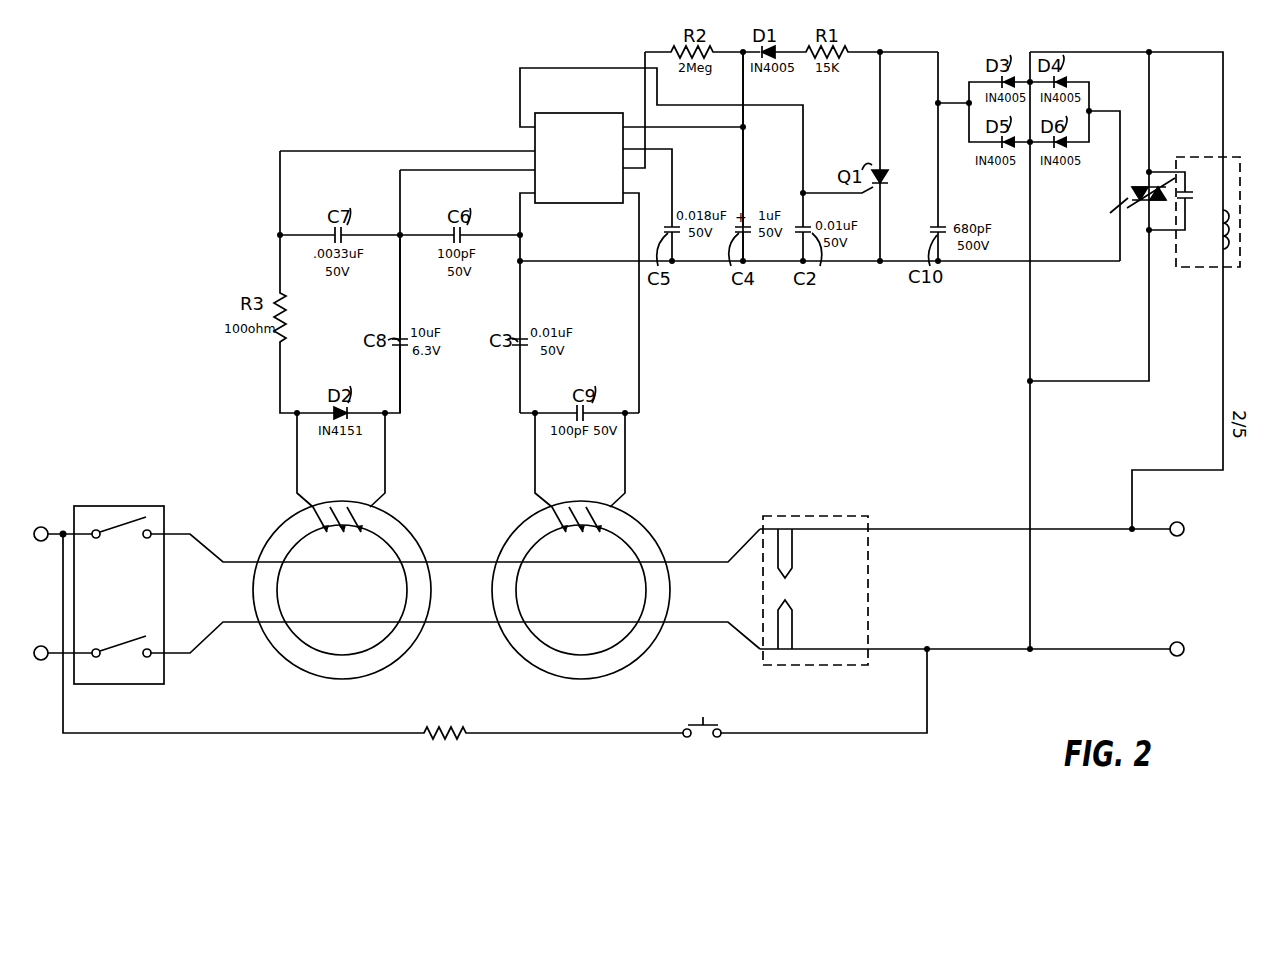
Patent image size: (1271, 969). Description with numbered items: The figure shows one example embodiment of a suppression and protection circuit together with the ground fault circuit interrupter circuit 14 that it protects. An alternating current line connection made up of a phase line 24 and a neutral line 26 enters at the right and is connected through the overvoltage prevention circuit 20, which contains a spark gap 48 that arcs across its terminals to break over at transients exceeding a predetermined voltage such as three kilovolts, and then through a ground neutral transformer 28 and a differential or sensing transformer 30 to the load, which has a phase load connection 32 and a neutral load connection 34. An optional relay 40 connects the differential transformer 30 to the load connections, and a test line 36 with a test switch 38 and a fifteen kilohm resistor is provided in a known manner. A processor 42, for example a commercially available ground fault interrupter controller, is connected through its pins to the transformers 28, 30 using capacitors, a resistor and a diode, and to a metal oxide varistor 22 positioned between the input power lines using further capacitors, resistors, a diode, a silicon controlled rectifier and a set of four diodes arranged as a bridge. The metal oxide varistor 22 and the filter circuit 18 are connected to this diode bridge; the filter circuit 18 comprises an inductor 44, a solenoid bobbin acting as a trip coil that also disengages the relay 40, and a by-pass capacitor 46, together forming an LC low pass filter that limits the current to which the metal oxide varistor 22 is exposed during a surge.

The ground fault circuit interrupter circuit 14 is at (198, 186).
The filter circuit 18 is at (1217, 268).
The overvoltage prevention circuit 20 is at (833, 570).
The metal oxide varistor 22 is at (1138, 166).
The phase line 24 is at (1092, 528).
The neutral line 26 is at (1043, 650).
The ground neutral transformer 28 is at (640, 533).
The differential transformer 30 is at (420, 541).
The phase load connection 32 is at (40, 522).
The neutral load connection 34 is at (41, 661).
The test line 36 is at (872, 737).
The test switch 38 is at (697, 750).
The relay 40 is at (148, 506).
The processor 42 is at (563, 203).
The inductor 44 is at (1234, 266).
The capacitor 46 is at (1210, 188).
The spark gap 48 is at (808, 583).